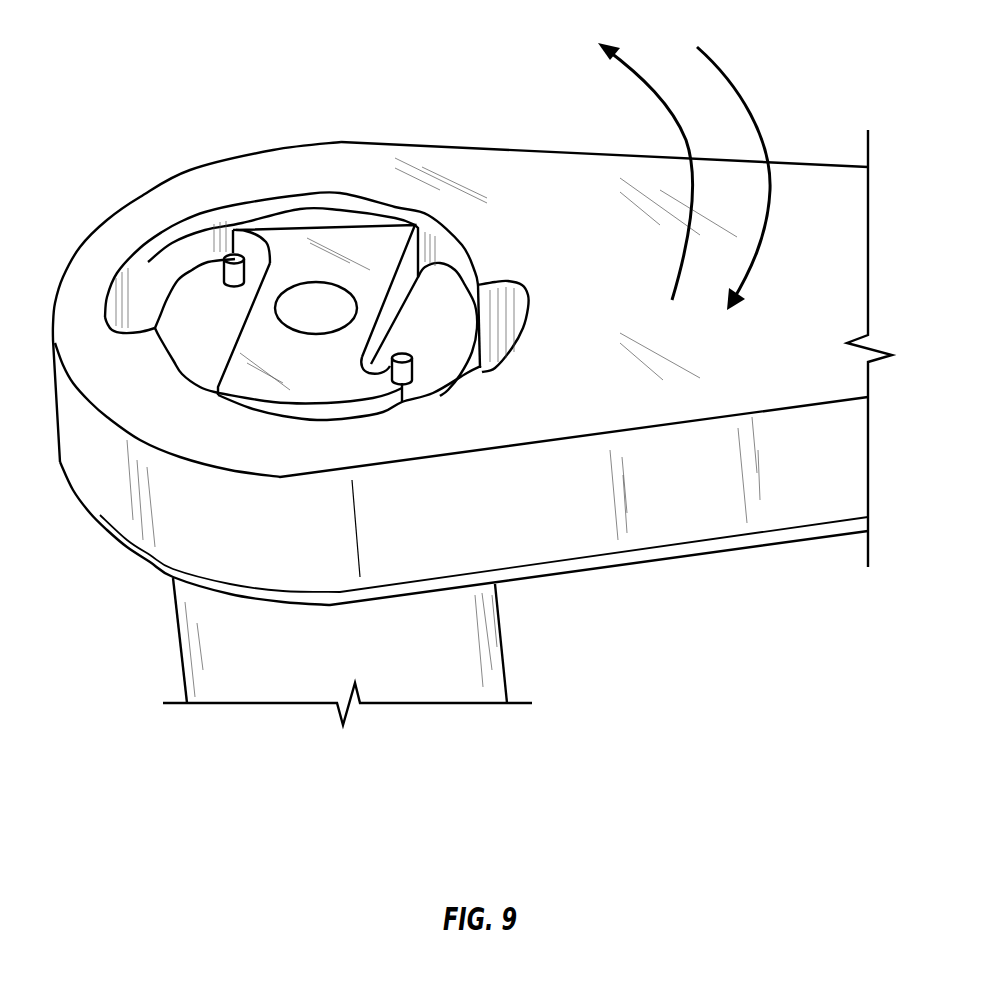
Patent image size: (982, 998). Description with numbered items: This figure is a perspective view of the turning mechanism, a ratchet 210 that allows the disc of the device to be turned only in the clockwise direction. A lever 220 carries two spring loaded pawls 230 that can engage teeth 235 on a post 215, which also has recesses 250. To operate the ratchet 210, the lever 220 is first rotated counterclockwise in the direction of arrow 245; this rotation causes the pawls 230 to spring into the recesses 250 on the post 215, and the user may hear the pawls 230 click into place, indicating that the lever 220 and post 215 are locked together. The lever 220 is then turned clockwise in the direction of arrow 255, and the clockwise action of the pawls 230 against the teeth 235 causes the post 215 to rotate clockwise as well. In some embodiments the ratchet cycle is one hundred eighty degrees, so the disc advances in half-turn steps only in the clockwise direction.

The ratchet 210 is at (146, 70).
The post 215 is at (497, 647).
The lever 220 is at (793, 193).
The spring loaded pawls 230 is at (187, 295).
The teeth 235 is at (246, 230).
The arrow 245 is at (622, 57).
The recesses 250 is at (237, 230).
The arrow 255 is at (713, 60).